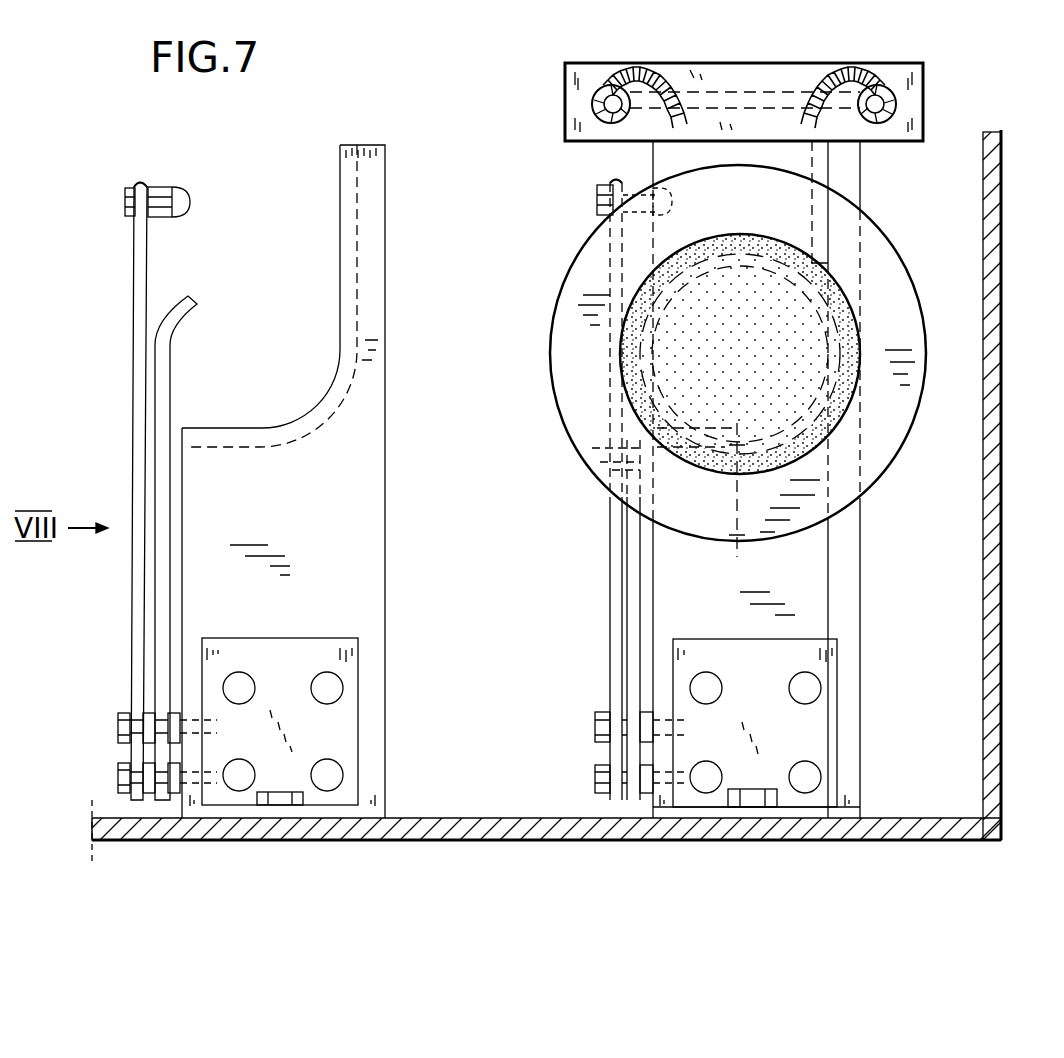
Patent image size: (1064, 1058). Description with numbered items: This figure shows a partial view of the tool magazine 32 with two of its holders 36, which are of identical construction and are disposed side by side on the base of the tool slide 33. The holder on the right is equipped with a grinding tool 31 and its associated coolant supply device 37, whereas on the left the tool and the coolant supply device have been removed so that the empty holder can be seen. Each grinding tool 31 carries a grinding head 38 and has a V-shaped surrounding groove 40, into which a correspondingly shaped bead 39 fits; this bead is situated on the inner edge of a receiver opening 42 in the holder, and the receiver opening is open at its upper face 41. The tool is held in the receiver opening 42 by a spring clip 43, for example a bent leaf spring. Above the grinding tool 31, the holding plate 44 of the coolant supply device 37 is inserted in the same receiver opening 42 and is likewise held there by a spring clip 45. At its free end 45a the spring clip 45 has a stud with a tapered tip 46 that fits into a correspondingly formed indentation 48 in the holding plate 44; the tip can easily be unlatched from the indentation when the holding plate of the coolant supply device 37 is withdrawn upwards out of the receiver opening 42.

The grinding tool 31 is at (887, 271).
The tool magazine 32 is at (1008, 217).
The tool slide 33 is at (612, 823).
The holder 36 is at (362, 560).
The coolant supply device 37 is at (903, 74).
The grinding head 38 is at (850, 348).
The bead 39 is at (868, 425).
The V-shaped surrounding groove 40 is at (357, 194).
The upper face 41 is at (240, 425).
The receiver opening 42 is at (300, 308).
The spring clip 43 is at (172, 395).
The holding plate 44 is at (787, 157).
The spring clip 45 is at (138, 466).
The free end 45a is at (145, 178).
The tapered tip 46 is at (160, 216).
The indentation 48 is at (674, 206).